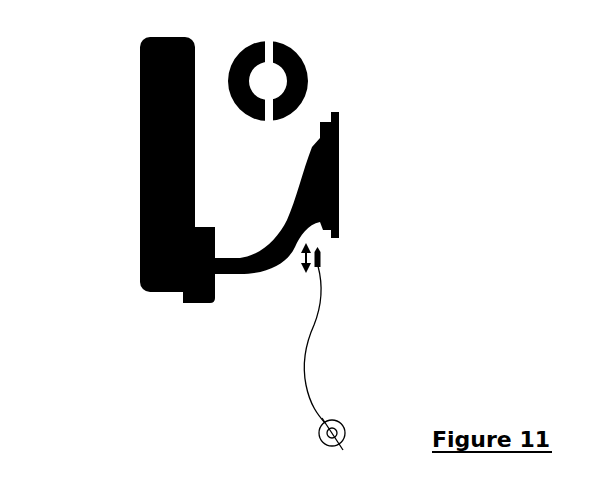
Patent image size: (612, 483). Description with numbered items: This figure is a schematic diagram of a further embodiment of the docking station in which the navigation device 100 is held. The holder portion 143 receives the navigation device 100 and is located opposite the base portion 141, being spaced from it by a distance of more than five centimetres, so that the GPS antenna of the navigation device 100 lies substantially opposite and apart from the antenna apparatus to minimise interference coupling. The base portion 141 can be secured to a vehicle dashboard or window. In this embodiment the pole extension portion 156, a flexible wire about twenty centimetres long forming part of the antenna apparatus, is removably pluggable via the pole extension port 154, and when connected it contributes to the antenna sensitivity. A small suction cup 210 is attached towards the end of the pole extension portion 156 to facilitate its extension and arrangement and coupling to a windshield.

The navigation device 100 is at (140, 195).
The holder portion 143 is at (180, 298).
The base portion 141 is at (313, 147).
The pole extension port 154 is at (323, 229).
The pole extension portion 156 is at (307, 385).
The suction cup 210 is at (343, 422).